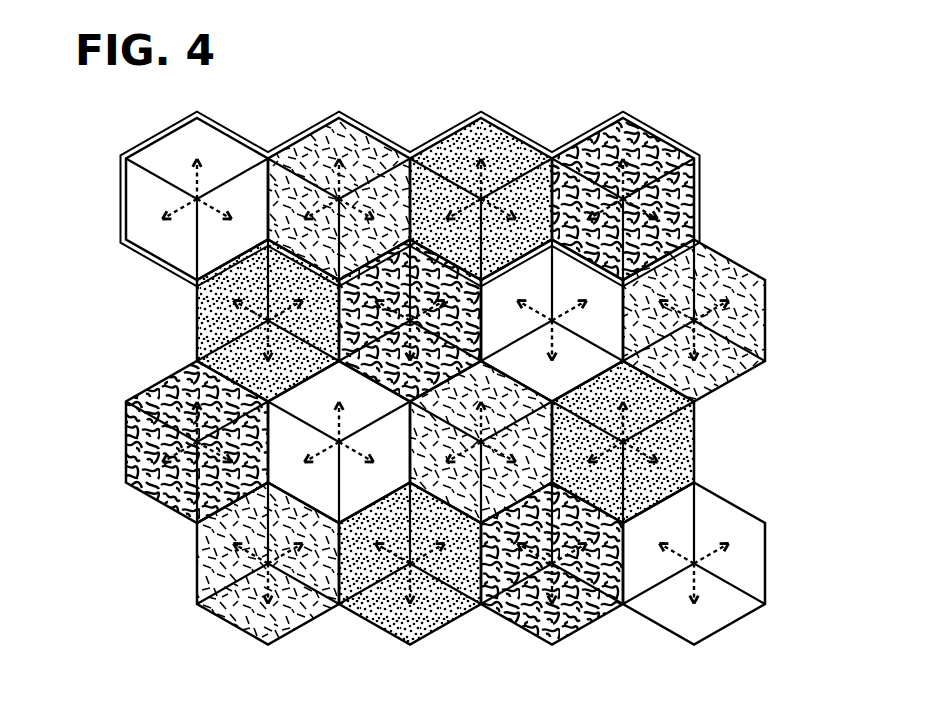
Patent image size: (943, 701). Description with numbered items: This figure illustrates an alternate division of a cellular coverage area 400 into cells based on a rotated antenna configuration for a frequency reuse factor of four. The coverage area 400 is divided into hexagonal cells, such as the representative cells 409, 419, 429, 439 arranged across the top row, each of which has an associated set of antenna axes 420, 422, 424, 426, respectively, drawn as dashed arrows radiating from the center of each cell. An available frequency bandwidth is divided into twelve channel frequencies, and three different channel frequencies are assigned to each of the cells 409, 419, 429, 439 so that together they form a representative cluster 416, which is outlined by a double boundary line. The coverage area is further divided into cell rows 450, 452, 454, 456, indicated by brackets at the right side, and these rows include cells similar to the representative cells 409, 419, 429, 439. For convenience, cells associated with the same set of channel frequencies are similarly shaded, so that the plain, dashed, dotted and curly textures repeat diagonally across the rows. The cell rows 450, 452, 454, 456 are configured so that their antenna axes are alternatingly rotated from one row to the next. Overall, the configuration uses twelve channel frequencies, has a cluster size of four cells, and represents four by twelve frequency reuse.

The coverage area 400 is at (713, 68).
The cell 409 is at (215, 128).
The cluster 416 is at (163, 135).
The cell 419 is at (362, 129).
The set of antenna axes 420 is at (213, 207).
The set of antenna axes 422 is at (334, 184).
The set of antenna axes 424 is at (479, 186).
The set of antenna axes 426 is at (634, 202).
The cell 429 is at (502, 129).
The cell 439 is at (645, 129).
The cell row 450 is at (670, 123).
The cell row 452 is at (773, 245).
The cell row 454 is at (772, 367).
The cell row 456 is at (707, 647).